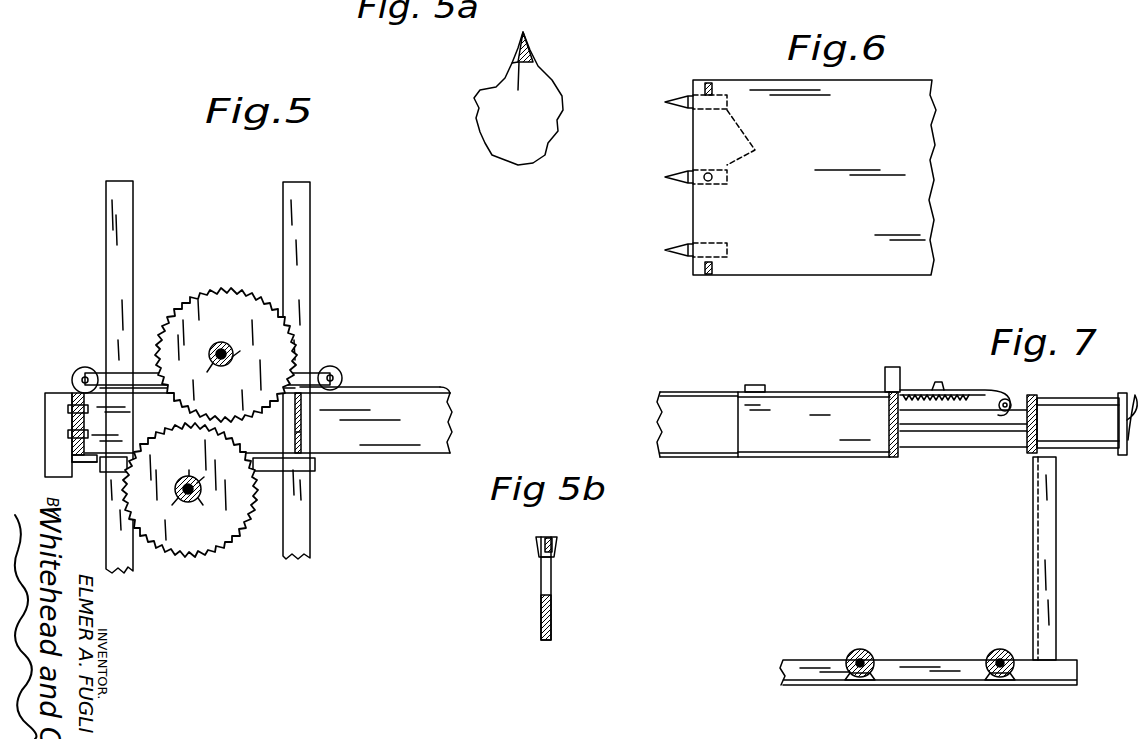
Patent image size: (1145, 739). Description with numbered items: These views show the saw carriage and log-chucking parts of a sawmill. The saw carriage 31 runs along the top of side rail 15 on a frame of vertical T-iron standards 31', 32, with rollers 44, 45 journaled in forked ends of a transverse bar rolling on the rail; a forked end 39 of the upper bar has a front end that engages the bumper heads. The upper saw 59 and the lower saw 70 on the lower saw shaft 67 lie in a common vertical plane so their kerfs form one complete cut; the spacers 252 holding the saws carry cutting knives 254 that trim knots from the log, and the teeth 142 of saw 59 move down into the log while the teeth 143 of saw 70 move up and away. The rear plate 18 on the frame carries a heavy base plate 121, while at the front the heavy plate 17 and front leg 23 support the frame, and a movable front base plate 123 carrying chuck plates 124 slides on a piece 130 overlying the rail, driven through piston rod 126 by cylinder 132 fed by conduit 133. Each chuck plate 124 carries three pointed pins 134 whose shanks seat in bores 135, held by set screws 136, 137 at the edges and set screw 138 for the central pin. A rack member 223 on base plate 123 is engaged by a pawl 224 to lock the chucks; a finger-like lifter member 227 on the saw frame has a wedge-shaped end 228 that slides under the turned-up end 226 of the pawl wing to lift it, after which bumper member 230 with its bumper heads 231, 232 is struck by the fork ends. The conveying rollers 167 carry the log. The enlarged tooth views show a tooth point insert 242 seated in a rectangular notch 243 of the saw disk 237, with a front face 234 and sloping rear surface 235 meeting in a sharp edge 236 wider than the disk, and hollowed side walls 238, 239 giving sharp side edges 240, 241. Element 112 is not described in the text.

In FIG. 5, the top side rail 15 is at (449, 397).
In FIG. 7, the top side rail 15 is at (675, 402).
In FIG. 7, the heavy plate 17 is at (1020, 442).
In FIG. 5, the rear plate 18 is at (72, 425).
In FIG. 7, the front leg 23 is at (1060, 562).
In FIG. 5, the saw carriage 31 is at (323, 370).
In FIG. 5, the vertical T-iron standard 31' is at (101, 377).
In FIG. 5, the vertical T-iron standard 32 is at (305, 316).
In FIG. 5, the forked end 39 is at (135, 383).
In FIG. 5, the roller 44 is at (93, 368).
In FIG. 5, the roller 45 is at (386, 349).
In FIG. 5, the upper saw 59 is at (195, 302).
In FIG. 5, the lower saw shaft 67 is at (186, 478).
In FIG. 5, the lower saw 70 is at (185, 557).
In FIG. 5, the joint 112 is at (418, 445).
In FIG. 5, the heavy base plate 121 is at (96, 462).
In FIG. 7, the front base plate 123 is at (1032, 395).
In FIG. 6, the front chuck plate 124 is at (862, 272).
In FIG. 7, the front chuck plate 124 is at (835, 380).
In FIG. 7, the piston rod 126 is at (952, 433).
In FIG. 7, the overlying piece 130 is at (753, 385).
In FIG. 7, the pneumatic or hydraulic cylinder 132 is at (1085, 405).
In FIG. 7, the conduit 133 is at (1128, 440).
In FIG. 6, the pointed pin 134 is at (685, 245).
In FIG. 7, the pointed pin 134 is at (738, 445).
In FIG. 6, the cylindrical bore 135 is at (756, 150).
In FIG. 6, the set screw 136 is at (708, 82).
In FIG. 6, the set screw 137 is at (712, 275).
In FIG. 6, the set screw 138 is at (708, 172).
In FIG. 5, the teeth of saw 59 142 is at (410, 432).
In FIG. 5, the teeth of saw 70 143 is at (260, 478).
In FIG. 7, the roller 167 is at (870, 652).
In FIG. 7, the rack member 223 is at (915, 395).
In FIG. 7, the pawl 224 is at (962, 390).
In FIG. 7, the turned up end 226 is at (940, 382).
In FIG. 5, the lifter member 227 is at (363, 389).
In FIG. 5, the wedge-shaped end 228 is at (444, 388).
In FIG. 7, the bumper member 230 is at (893, 367).
In FIG. 7, the bumper head 231 is at (890, 393).
In FIG. 5, the bumper head 232 is at (343, 388).
In FIG. 5A, the front face 234 is at (512, 55).
In FIG. 5A, the sloping rear surface 235 is at (532, 44).
In FIG. 5A, the sharp edge 236 is at (523, 32).
In FIG. 5B, the sharp edge 236 is at (545, 538).
In FIG. 5A, the saw disk 237 is at (530, 127).
In FIG. 5B, the saw disk 237 is at (548, 625).
In FIG. 5B, the side wall 238 is at (553, 541).
In FIG. 5B, the side wall 239 is at (540, 541).
In FIG. 5B, the side edge 240 is at (553, 549).
In FIG. 5A, the side edge 241 is at (512, 62).
In FIG. 5B, the side edge 241 is at (539, 551).
In FIG. 5A, the tooth point insert 242 is at (516, 45).
In FIG. 5A, the rectangular notch 243 is at (518, 90).
In FIG. 5, the spacer 252 is at (232, 364).
In FIG. 5, the cutting knife 254 is at (236, 348).